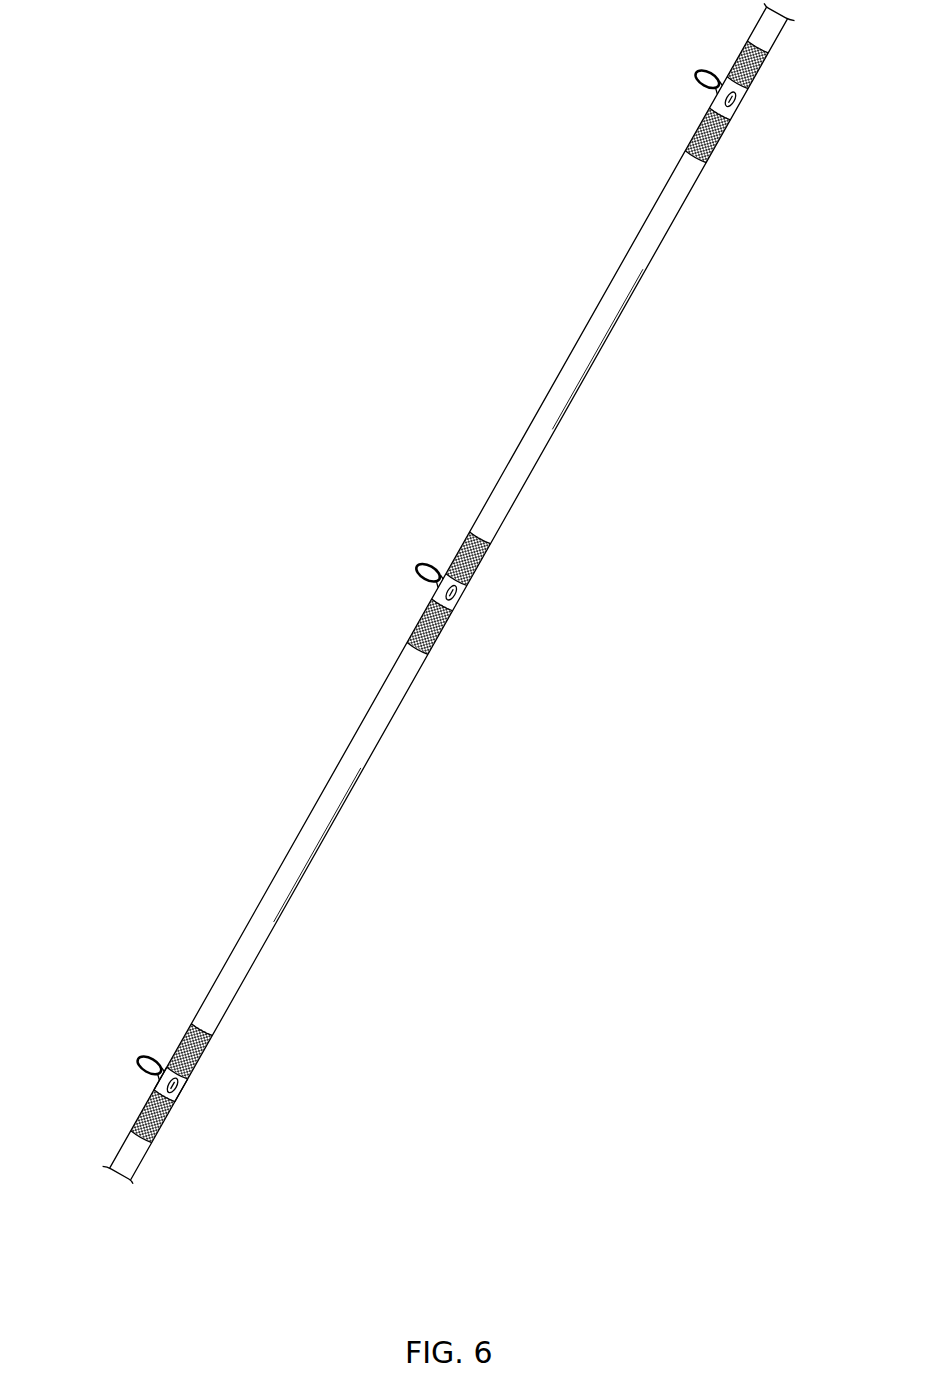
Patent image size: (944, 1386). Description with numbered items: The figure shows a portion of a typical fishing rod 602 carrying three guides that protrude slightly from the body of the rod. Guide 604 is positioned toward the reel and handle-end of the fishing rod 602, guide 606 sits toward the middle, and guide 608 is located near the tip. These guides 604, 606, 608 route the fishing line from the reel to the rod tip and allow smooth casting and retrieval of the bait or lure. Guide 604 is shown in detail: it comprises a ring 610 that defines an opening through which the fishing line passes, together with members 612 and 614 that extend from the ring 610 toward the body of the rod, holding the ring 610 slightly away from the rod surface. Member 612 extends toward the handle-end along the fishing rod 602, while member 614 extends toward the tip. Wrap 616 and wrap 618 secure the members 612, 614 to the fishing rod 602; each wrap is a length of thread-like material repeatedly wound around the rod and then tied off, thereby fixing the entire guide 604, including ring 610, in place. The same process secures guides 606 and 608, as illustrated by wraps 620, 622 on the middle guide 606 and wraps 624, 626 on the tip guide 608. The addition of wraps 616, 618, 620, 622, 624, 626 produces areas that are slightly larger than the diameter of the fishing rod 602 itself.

The fishing rod 602 is at (482, 260).
The guide 604 is at (108, 1045).
The guide 606 is at (398, 555).
The guide 608 is at (677, 65).
The ring 610 is at (147, 1050).
The member 612 is at (147, 1087).
The member 614 is at (182, 1085).
The wrap 616 is at (170, 1128).
The wrap 618 is at (207, 1053).
The wrap 620 is at (448, 642).
The wrap 622 is at (488, 572).
The wrap 624 is at (728, 148).
The wrap 626 is at (768, 78).